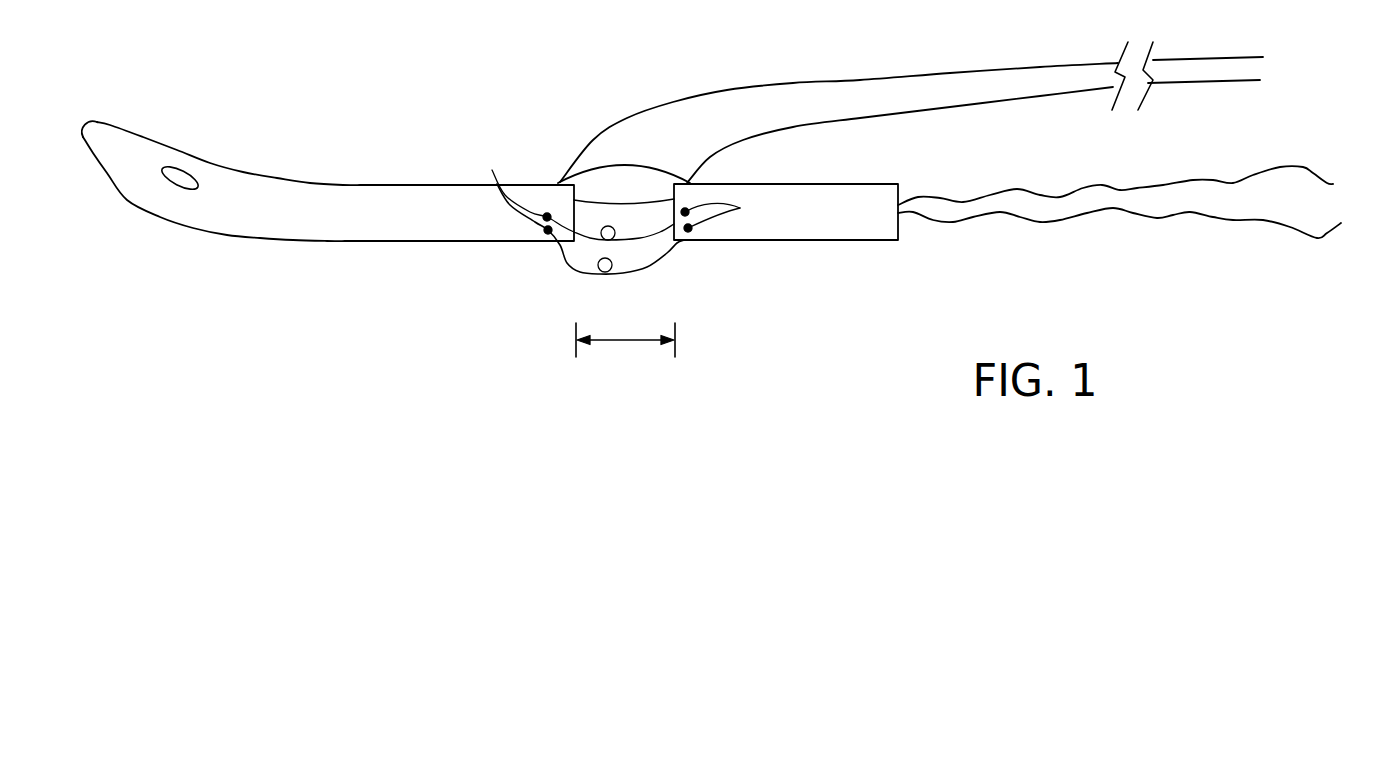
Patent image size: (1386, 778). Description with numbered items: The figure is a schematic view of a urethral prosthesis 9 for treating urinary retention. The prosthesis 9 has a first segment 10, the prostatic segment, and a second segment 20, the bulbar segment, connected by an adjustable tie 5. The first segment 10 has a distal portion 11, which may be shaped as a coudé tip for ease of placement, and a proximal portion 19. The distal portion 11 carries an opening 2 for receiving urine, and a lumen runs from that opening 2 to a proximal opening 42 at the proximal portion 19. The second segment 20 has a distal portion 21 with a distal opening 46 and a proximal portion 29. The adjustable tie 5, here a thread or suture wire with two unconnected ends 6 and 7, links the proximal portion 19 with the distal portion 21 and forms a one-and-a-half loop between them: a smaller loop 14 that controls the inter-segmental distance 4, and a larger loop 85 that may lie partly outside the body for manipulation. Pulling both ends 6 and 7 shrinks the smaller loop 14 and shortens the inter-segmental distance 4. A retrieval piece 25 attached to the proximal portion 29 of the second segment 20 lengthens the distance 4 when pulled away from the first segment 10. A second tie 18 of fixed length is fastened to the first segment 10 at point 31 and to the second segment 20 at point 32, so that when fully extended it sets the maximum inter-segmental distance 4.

The opening 2 is at (179, 177).
The inter-segmental distance 4 is at (625, 350).
The adjustable tie 5 is at (620, 167).
The end of the tie 6 is at (1263, 57).
The end of the tie 7 is at (1260, 80).
The prosthesis 9 is at (478, 108).
The first segment 10 is at (300, 227).
The distal portion 11 is at (112, 162).
The smaller loop 14 is at (595, 198).
The second tie 18 is at (590, 273).
The proximal portion 19 is at (498, 228).
The second segment 20 is at (818, 225).
The distal portion 21 is at (703, 228).
The retrieval piece 25 is at (1142, 202).
The proximal portion 29 is at (878, 237).
The point 31 is at (573, 188).
The point 32 is at (730, 211).
The proximal opening 42 is at (574, 210).
The distal opening 46 is at (693, 183).
The larger loop 85 is at (782, 85).